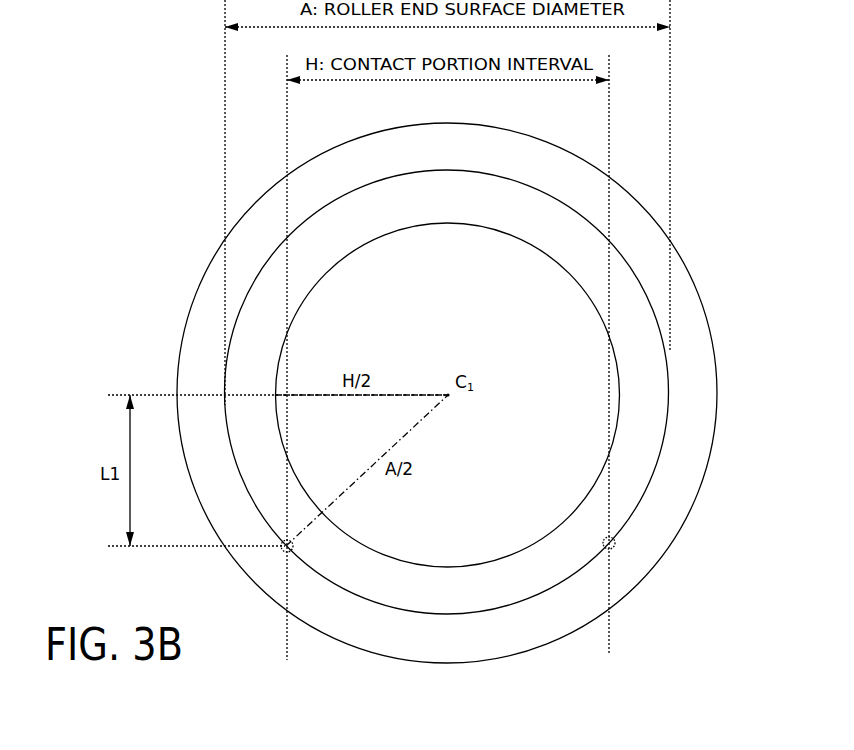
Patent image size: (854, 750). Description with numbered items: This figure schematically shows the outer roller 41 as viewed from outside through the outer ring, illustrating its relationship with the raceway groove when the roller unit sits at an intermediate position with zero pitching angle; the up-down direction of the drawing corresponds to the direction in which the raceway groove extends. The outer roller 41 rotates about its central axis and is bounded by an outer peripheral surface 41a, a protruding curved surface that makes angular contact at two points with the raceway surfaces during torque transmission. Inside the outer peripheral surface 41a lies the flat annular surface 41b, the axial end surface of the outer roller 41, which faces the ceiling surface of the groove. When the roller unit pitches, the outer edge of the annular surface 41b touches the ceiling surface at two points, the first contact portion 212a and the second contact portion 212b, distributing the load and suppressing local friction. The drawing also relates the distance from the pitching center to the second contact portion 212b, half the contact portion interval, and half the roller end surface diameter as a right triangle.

The outer roller 41 is at (412, 393).
The outer peripheral surface 41a is at (192, 300).
The annular surface 41b is at (247, 382).
The first contact portion 212a is at (612, 547).
The second contact portion 212b is at (285, 548).